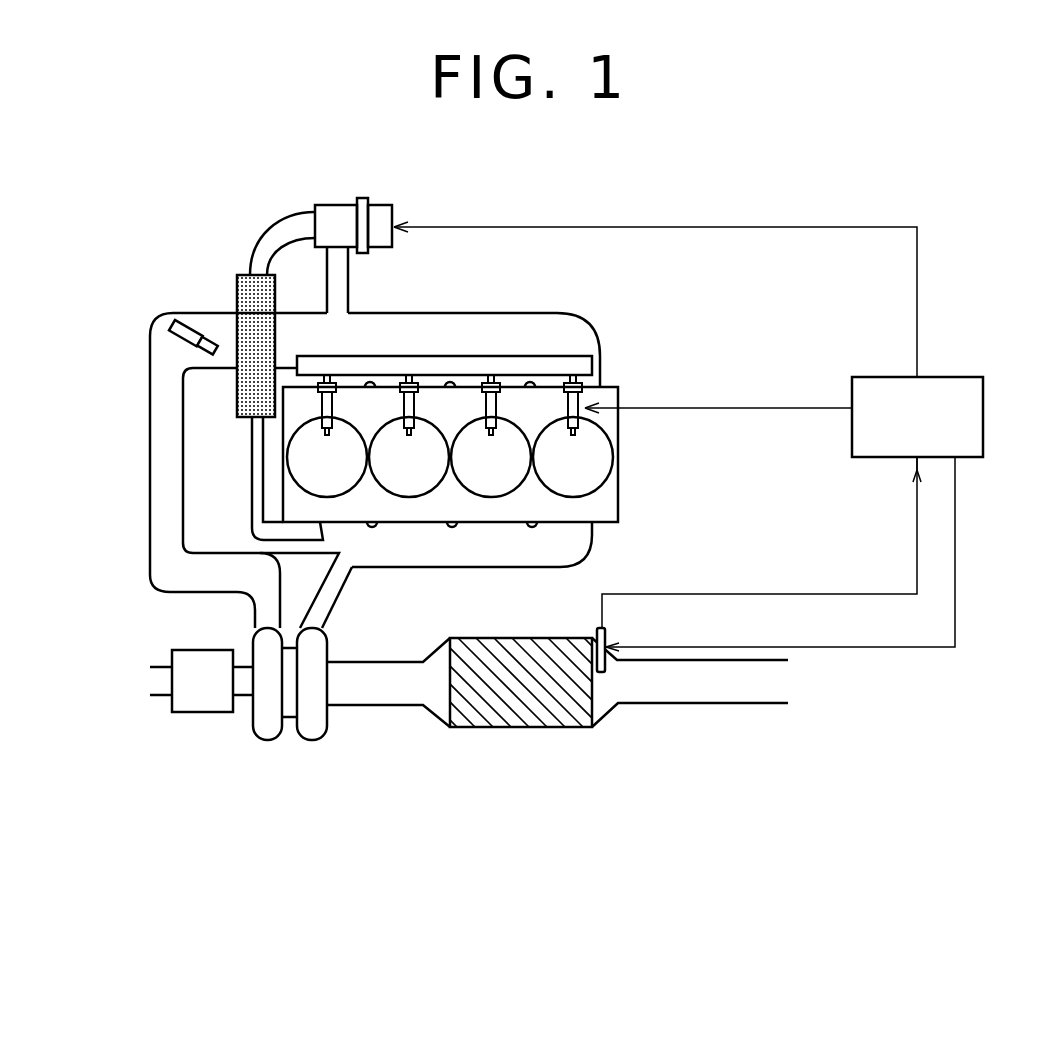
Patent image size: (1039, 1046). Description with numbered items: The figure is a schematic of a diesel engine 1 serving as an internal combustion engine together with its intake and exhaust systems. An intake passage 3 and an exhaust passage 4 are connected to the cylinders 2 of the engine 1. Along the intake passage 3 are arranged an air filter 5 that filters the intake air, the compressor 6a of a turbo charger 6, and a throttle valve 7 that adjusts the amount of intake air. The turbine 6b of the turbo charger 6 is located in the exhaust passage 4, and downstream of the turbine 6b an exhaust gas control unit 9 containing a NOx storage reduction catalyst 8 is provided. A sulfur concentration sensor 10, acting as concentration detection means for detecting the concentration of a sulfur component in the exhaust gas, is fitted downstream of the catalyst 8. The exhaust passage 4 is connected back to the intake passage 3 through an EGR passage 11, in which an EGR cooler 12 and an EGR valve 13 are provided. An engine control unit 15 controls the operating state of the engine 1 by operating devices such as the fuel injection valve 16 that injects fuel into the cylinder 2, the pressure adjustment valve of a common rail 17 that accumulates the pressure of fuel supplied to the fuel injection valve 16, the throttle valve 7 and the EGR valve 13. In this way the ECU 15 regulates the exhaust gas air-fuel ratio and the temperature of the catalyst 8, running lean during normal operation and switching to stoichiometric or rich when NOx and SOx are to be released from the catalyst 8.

The diesel engine 1 is at (620, 500).
The cylinders 2 is at (614, 450).
The intake passage 3 is at (468, 312).
The exhaust passage 4 is at (548, 541).
The air filter 5 is at (183, 652).
The turbo charger 6 is at (262, 723).
The compressor 6a is at (268, 713).
The turbine 6b is at (312, 715).
The throttle valve 7 is at (175, 325).
The NOx storage reduction catalyst 8 is at (473, 712).
The exhaust gas control unit 9 is at (523, 728).
The sulfur concentration sensor 10 is at (590, 628).
The EGR passage 11 is at (251, 440).
The EGR cooler 12 is at (237, 283).
The EGR valve 13 is at (336, 203).
The engine control unit (ECU) 15 is at (963, 377).
The fuel injection valve 16 is at (583, 400).
The common rail 17 is at (584, 356).